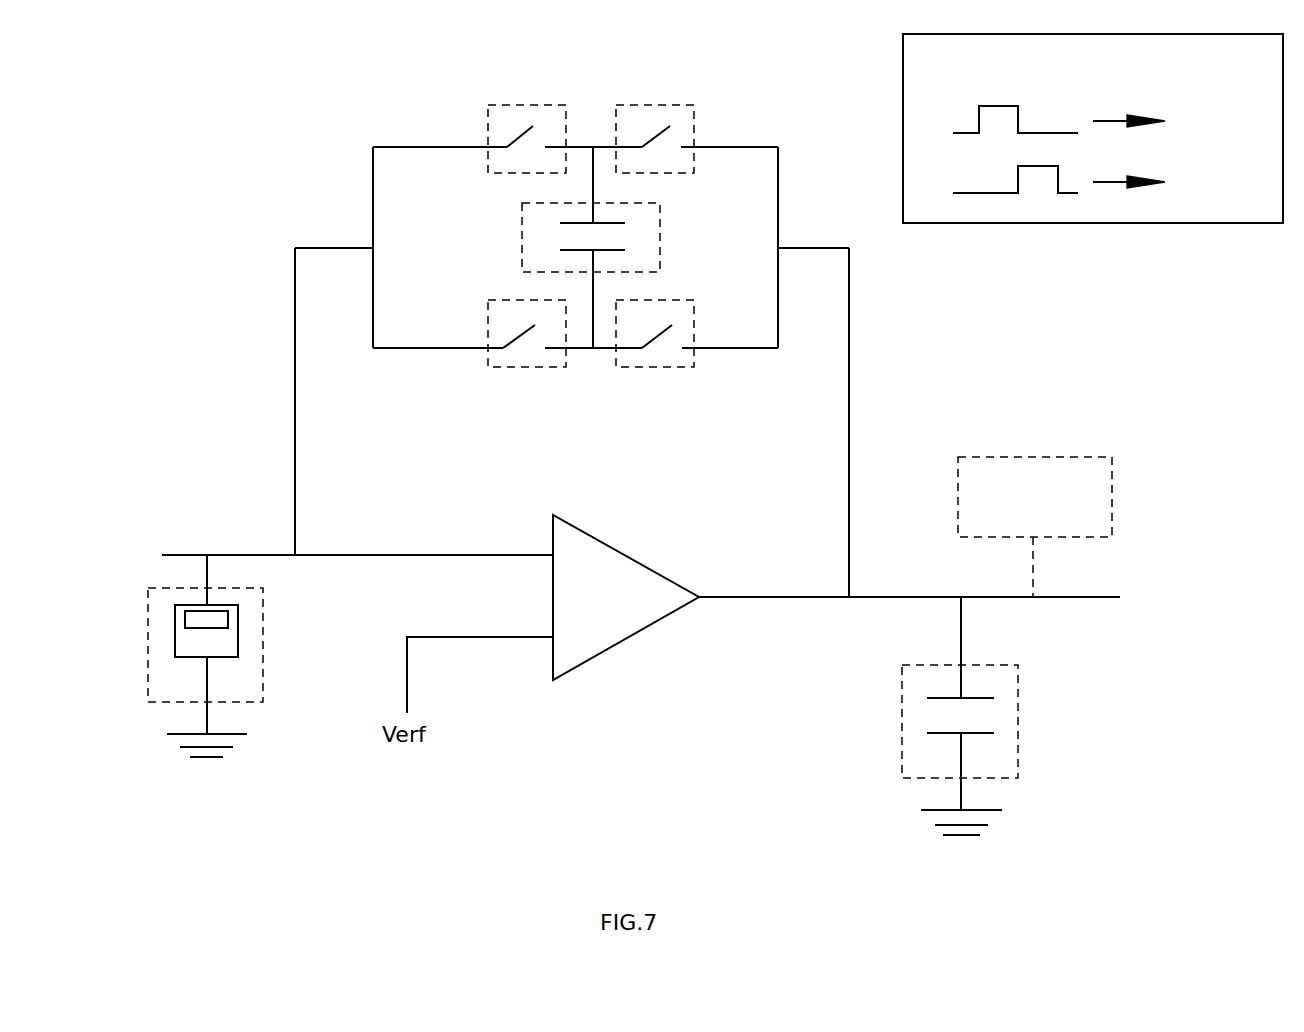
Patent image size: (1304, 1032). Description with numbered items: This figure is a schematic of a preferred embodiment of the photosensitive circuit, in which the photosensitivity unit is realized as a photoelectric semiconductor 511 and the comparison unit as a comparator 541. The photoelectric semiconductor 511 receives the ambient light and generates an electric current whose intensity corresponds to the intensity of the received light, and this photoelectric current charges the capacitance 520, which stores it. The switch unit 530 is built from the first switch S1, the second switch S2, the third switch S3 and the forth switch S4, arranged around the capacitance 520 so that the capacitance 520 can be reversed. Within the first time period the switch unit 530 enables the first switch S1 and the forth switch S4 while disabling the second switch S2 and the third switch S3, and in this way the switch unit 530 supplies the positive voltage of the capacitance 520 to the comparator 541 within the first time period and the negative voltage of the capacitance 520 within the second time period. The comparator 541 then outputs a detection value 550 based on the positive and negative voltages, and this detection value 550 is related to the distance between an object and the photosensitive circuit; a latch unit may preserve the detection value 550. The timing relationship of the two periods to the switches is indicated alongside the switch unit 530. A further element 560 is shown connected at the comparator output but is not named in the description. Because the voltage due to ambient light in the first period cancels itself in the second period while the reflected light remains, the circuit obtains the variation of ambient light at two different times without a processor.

The photoelectric semiconductor 511 is at (263, 643).
The capacitance 520 is at (522, 240).
The switch unit 530 is at (1113, 67).
The comparator 541 is at (625, 638).
The detection value 550 is at (1053, 511).
The holding capacitor 560 is at (1018, 723).
The first switch S1 is at (493, 105).
The second switch S2 is at (622, 105).
The third switch S3 is at (545, 367).
The forth switch S4 is at (672, 367).